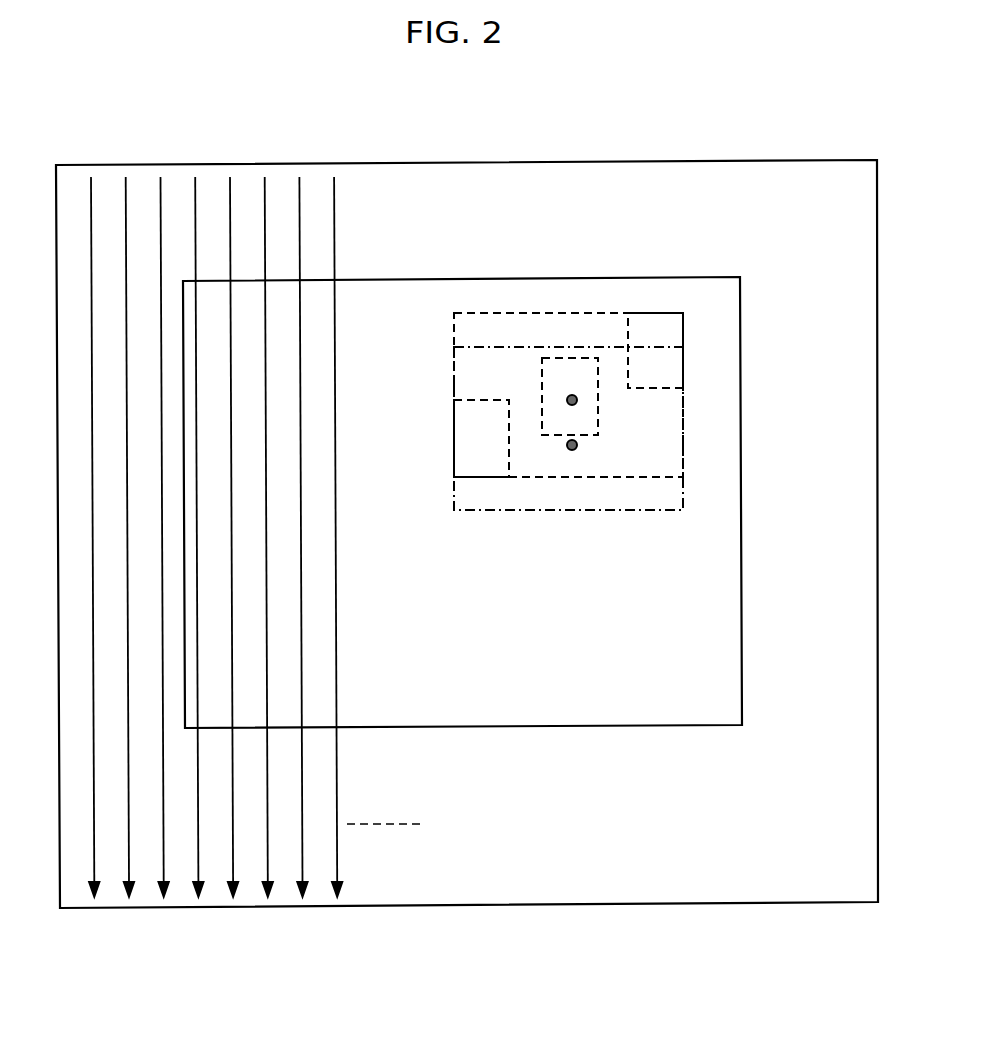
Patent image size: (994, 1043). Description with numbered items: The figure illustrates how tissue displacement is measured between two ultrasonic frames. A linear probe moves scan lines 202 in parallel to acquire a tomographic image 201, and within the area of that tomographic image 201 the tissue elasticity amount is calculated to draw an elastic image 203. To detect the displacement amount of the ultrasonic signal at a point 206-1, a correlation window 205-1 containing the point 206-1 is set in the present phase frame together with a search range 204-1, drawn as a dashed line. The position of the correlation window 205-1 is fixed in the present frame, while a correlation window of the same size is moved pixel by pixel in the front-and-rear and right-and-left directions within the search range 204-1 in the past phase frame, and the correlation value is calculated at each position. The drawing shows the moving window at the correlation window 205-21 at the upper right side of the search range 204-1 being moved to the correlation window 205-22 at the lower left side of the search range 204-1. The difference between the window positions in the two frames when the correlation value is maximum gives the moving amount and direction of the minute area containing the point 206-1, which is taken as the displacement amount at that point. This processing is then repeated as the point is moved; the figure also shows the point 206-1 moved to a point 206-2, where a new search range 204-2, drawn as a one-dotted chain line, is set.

The tomographic image 201 is at (497, 905).
The scan lines 202 is at (407, 930).
The elastic image 203 is at (493, 727).
The search range 204-1 is at (578, 310).
The new search range 204-2 is at (683, 502).
The correlation window 205-1 is at (541, 387).
The correlation window 205-21 is at (665, 330).
The correlation window 205-22 is at (470, 412).
The point 206-1 is at (578, 402).
The point 206-2 is at (578, 447).